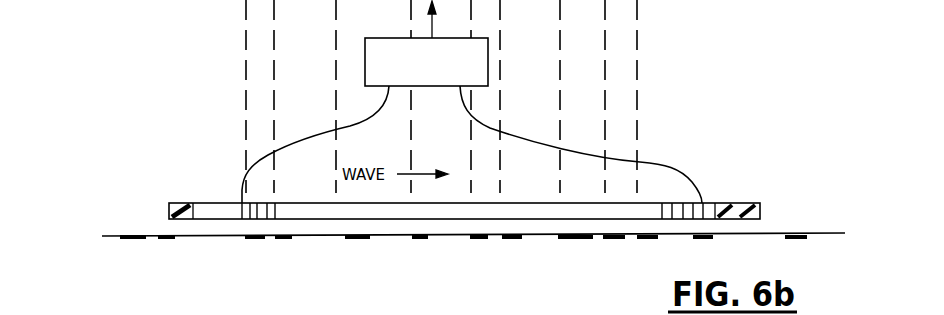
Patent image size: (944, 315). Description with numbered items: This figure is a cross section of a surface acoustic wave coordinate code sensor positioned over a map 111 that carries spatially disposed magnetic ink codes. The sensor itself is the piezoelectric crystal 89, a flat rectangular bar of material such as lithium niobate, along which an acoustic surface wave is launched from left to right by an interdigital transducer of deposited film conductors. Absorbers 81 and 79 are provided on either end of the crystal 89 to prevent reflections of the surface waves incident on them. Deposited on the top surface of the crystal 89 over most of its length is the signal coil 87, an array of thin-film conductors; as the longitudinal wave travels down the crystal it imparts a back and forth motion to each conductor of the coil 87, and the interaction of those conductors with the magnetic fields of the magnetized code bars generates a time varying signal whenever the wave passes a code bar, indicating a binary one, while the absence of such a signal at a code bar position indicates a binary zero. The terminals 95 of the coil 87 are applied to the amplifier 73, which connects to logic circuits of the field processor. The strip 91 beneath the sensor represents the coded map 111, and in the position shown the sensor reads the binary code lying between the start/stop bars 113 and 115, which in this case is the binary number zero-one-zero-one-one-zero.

The amplifier 73 is at (491, 63).
The terminals 95 is at (345, 127).
The piezoelectric crystal 89 is at (507, 203).
The absorber 81 is at (187, 203).
The absorber 79 is at (730, 203).
The signal coil 87 is at (242, 208).
The coded tape strip 91 is at (118, 239).
The start/stop bar 113 is at (348, 240).
The start/stop bar 115 is at (586, 237).
The map 111 is at (822, 236).